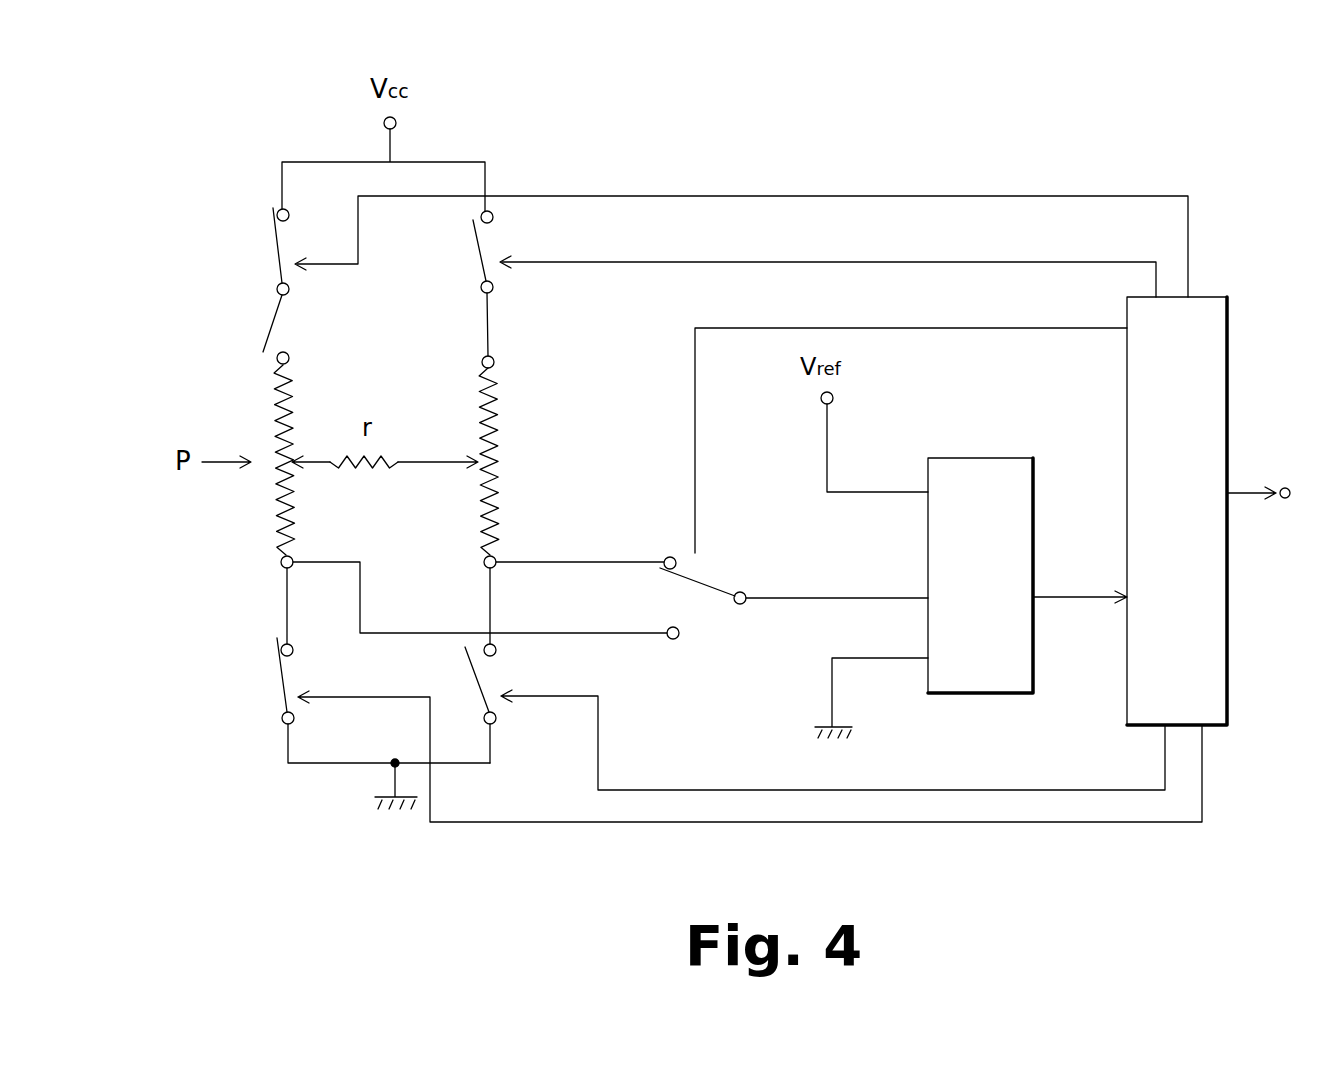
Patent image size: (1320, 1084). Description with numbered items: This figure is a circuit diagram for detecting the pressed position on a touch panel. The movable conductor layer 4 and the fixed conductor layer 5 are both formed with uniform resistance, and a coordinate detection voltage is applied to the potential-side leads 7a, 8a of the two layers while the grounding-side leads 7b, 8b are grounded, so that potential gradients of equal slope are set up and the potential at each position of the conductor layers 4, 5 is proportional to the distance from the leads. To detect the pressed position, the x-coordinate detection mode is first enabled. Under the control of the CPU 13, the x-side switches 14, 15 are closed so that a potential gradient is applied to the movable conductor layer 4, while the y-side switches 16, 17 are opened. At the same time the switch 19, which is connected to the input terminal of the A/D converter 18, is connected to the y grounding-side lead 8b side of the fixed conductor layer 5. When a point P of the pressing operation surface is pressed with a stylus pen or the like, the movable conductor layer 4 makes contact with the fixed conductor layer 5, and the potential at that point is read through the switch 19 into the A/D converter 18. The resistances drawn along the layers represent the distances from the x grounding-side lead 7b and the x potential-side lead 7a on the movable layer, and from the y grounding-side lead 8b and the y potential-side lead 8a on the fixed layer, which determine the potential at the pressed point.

The movable conductor layer 4 is at (258, 405).
The fixed conductor layer 5 is at (468, 405).
The x potential-side lead 7a is at (290, 353).
The x grounding-side lead 7b is at (280, 565).
The y potential-side lead 8a is at (495, 357).
The y grounding-side lead 8b is at (485, 561).
The CPU 13 is at (1229, 665).
The x-side switch 14 is at (260, 245).
The x-side switch 15 is at (267, 687).
The y-side switch 16 is at (458, 255).
The y-side switch 17 is at (465, 685).
The A/D converter 18 is at (1033, 663).
The switch 19 is at (704, 606).